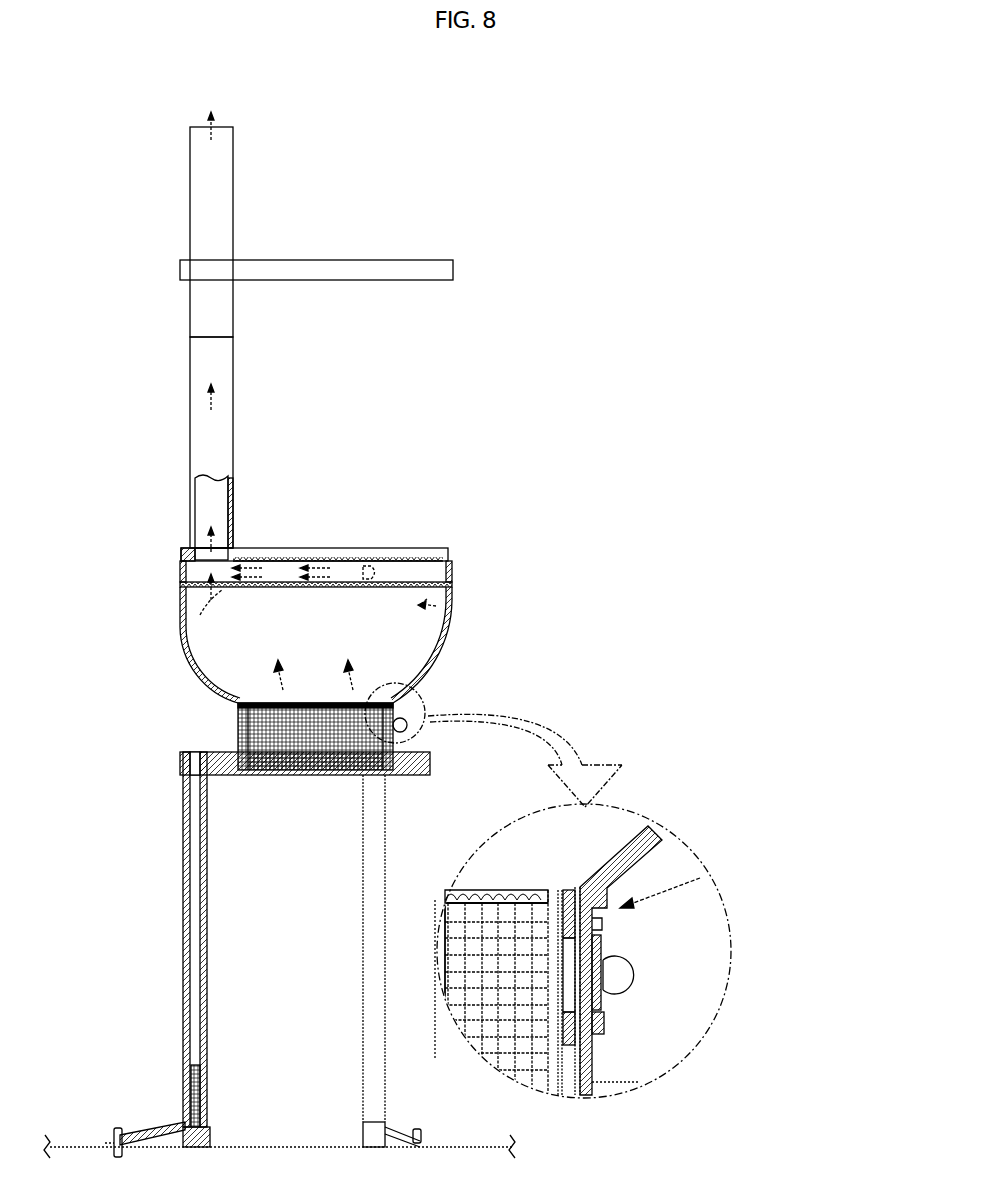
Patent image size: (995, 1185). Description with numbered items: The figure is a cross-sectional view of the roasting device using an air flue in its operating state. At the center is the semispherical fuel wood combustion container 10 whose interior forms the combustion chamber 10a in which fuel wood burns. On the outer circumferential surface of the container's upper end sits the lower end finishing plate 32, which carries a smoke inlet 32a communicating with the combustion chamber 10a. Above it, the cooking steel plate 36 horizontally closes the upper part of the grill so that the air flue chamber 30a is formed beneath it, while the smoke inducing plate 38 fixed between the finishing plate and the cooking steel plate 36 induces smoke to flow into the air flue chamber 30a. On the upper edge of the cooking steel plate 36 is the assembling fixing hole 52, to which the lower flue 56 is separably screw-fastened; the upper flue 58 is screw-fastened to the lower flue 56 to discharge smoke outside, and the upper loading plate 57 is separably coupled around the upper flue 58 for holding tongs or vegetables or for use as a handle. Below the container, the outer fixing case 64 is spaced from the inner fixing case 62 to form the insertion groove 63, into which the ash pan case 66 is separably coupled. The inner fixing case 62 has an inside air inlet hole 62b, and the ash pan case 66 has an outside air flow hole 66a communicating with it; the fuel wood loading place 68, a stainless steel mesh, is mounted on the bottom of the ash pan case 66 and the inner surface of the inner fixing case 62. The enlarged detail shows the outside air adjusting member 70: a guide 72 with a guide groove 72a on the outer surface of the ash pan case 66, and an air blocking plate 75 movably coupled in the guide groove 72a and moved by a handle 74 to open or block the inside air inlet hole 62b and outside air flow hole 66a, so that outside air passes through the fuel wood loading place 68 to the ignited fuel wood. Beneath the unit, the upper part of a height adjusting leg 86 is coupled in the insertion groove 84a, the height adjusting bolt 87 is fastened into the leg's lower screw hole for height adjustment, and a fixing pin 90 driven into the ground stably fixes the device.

The upper flue 58 is at (202, 203).
The upper loading plate 57 is at (357, 268).
The lower flue 56 is at (203, 440).
The assembling fixing hole 52 is at (245, 548).
The smoke inducing plate 38 is at (280, 558).
The cooking steel plate 36 is at (336, 553).
The air flue chamber 30a is at (182, 573).
The lower end finishing plate 32 is at (185, 585).
The smoke inlet 32a is at (204, 590).
The fuel wood combustion container 10 is at (448, 635).
The combustion chamber 10a is at (447, 600).
The outer fixing case 64 is at (235, 700).
The insertion groove 84a is at (180, 758).
The height adjusting leg 86 is at (183, 902).
The height adjusting bolt 87 is at (185, 1080).
The fixing pin 90 is at (118, 1130).
The insertion groove 63 is at (585, 882).
The fuel wood loading place 68 is at (456, 930).
The inner fixing case 62 is at (525, 1055).
The inside air inlet hole 62b is at (530, 998).
The ash pan case 66 is at (597, 1062).
The outside air flow hole 66a is at (604, 1022).
The outside air adjusting member 70 is at (690, 880).
The guide 72 is at (600, 1010).
The guide groove 72a is at (600, 942).
The handle 74 is at (640, 975).
The air blocking plate 75 is at (603, 1000).